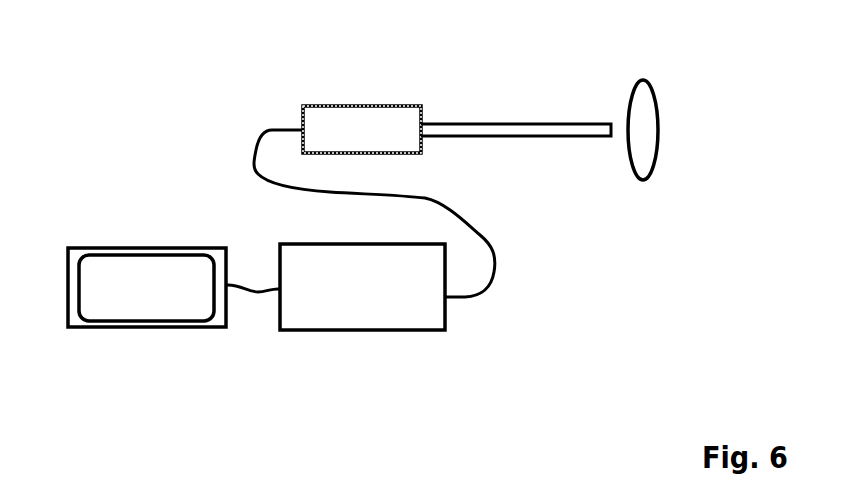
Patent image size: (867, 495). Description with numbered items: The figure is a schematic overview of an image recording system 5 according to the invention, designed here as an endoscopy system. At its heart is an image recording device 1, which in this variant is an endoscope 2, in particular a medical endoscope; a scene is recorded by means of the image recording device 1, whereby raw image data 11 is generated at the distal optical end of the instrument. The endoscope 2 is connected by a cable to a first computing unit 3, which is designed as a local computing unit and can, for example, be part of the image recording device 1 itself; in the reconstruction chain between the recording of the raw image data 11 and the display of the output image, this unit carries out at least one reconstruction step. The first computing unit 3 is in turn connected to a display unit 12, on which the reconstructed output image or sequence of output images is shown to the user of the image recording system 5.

The image recording device 1 is at (331, 50).
The endoscope 2 is at (362, 129).
The first computing unit 3 is at (362, 287).
The image recording system 5 is at (112, 143).
The raw image data 11 is at (658, 130).
The display unit 12 is at (147, 287).